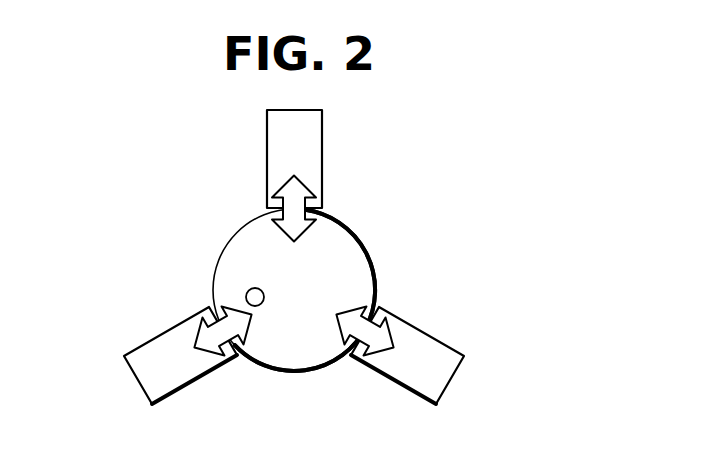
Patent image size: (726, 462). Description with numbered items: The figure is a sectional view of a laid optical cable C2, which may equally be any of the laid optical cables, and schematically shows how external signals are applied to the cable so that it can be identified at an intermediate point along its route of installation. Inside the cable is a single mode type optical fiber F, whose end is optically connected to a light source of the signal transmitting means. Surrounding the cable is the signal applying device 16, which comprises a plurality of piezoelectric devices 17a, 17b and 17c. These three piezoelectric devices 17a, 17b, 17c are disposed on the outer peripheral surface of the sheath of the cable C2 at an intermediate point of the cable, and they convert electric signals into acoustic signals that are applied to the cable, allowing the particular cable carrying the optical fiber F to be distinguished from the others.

The signal applying device 16 is at (368, 395).
The piezoelectric device 17a is at (322, 128).
The piezoelectric device 17b is at (430, 333).
The piezoelectric device 17c is at (167, 330).
The optical cable C2 is at (375, 241).
The optical fiber F is at (253, 288).